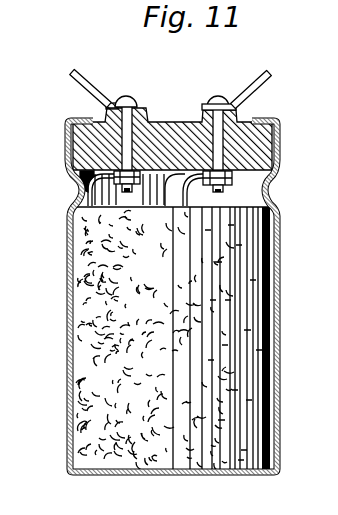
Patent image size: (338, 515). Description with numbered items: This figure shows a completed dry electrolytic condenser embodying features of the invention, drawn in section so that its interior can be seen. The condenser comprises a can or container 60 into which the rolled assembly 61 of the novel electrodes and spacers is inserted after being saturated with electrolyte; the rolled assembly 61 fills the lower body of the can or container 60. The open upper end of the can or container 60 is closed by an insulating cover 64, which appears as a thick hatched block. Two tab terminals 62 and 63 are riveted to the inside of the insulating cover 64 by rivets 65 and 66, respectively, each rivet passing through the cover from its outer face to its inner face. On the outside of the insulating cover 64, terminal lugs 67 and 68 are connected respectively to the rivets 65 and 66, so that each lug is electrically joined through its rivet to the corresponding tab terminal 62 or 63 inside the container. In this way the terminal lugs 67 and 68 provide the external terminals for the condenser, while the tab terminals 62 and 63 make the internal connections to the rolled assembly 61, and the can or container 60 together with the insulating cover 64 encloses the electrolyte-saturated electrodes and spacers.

The can or container 60 is at (68, 308).
The rolled assembly 61 is at (88, 351).
The tab terminal 62 is at (77, 190).
The tab terminal 63 is at (183, 202).
The insulating cover 64 is at (173, 128).
The rivet 65 is at (125, 98).
The rivet 66 is at (217, 99).
The terminal lug 67 is at (97, 53).
The terminal lug 68 is at (264, 72).